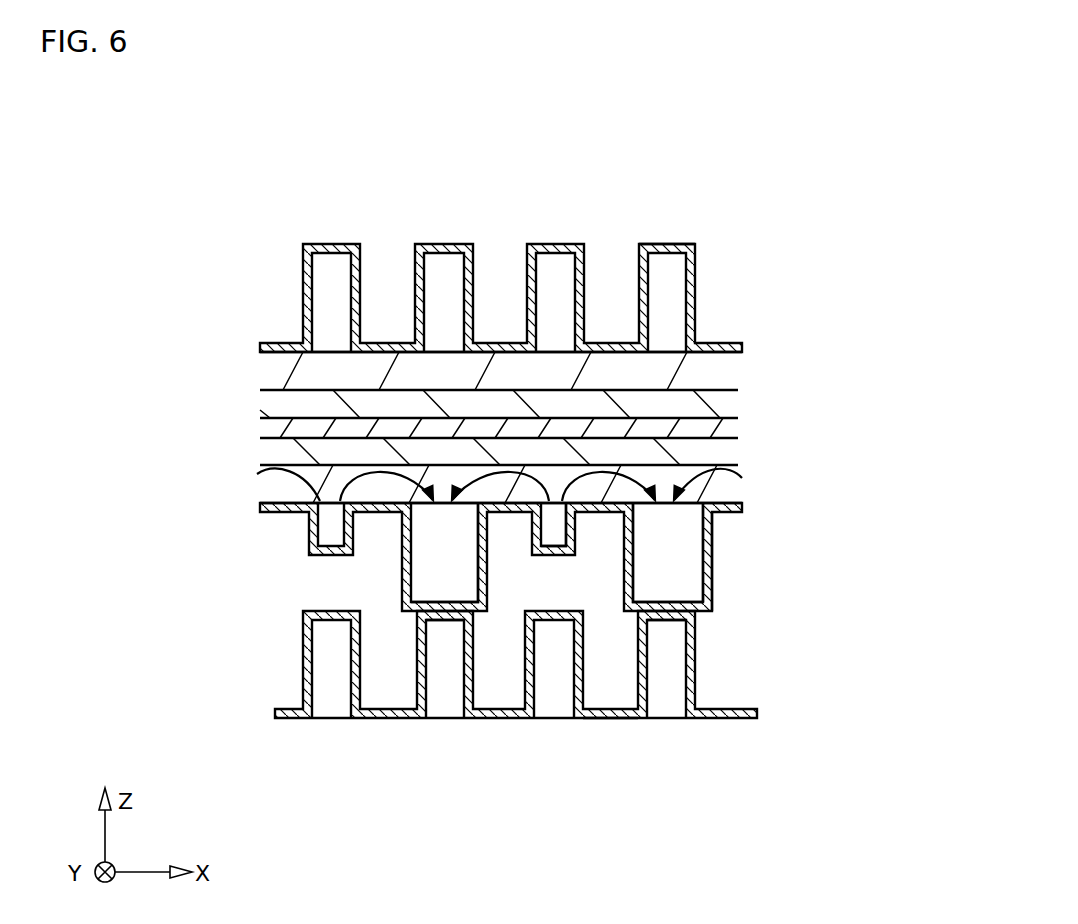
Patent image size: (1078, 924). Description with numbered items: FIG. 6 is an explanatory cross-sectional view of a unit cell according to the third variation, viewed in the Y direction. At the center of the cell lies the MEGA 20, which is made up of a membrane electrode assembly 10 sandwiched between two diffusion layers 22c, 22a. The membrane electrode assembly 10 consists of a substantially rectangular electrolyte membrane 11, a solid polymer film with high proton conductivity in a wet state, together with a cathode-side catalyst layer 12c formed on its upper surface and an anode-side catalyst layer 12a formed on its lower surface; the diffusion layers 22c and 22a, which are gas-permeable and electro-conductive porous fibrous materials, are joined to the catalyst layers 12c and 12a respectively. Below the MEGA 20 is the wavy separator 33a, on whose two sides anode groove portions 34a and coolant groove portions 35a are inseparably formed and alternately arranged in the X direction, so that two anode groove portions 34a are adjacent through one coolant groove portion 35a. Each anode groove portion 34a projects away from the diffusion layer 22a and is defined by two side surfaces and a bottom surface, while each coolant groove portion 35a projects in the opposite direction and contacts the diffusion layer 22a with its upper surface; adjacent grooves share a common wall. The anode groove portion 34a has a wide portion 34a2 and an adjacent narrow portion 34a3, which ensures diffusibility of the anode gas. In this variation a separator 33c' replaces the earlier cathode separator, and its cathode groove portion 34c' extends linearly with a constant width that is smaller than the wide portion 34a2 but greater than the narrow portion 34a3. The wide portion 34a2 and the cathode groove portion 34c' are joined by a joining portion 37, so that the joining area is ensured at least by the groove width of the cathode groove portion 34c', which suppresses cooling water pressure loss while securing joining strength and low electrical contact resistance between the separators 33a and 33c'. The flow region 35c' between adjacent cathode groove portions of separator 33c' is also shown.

The MEGA 20 is at (905, 337).
The membrane electrode assembly 10 is at (843, 380).
The electrolyte membrane 11 is at (733, 428).
The cathode-side catalyst layer 12c is at (733, 405).
The anode-side catalyst layer 12a is at (733, 452).
The diffusion layer 22c is at (713, 365).
The diffusion layer 22a is at (713, 486).
The separator 33a is at (727, 583).
The anode groove portion 34a is at (650, 538).
The wide portion 34a2 is at (463, 575).
The narrow portion 34a3 is at (533, 525).
The coolant groove portion 35a is at (384, 537).
The joining portion 37 is at (663, 615).
The separator 33c' is at (652, 512).
The cathode groove portion 34c' is at (410, 503).
The cathode flow path of adjacent separator 35c' is at (387, 507).